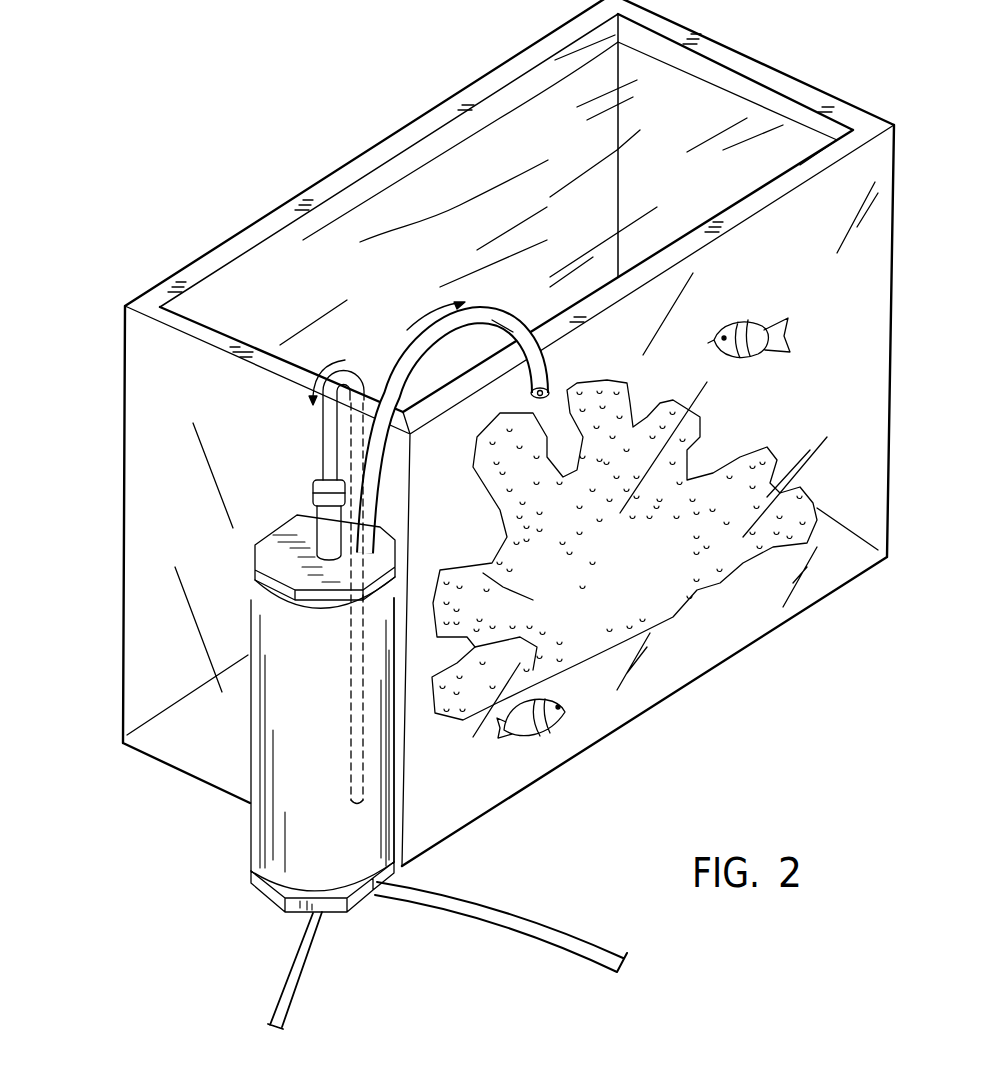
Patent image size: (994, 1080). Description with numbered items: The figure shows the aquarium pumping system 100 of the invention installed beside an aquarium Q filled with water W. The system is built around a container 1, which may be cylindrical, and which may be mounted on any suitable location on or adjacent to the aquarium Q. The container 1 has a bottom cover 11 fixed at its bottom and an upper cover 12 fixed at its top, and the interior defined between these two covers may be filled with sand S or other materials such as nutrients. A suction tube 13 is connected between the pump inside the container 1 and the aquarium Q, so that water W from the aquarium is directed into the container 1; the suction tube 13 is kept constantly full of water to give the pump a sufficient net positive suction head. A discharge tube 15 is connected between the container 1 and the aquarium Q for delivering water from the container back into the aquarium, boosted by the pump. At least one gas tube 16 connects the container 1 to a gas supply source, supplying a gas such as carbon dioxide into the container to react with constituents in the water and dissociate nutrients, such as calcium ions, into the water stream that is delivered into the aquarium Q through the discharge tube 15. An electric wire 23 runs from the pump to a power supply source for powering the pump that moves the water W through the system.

The container 1 is at (245, 743).
The aquarium pumping system 100 is at (231, 722).
The bottom cover 11 is at (267, 893).
The upper cover 12 is at (265, 549).
The suction tube 13 is at (316, 508).
The discharge tube 15 is at (373, 450).
The gas tube 16 is at (478, 913).
The electric wire 23 is at (294, 967).
The water W is at (303, 240).
The sand S is at (288, 833).
The aquarium Q is at (790, 620).